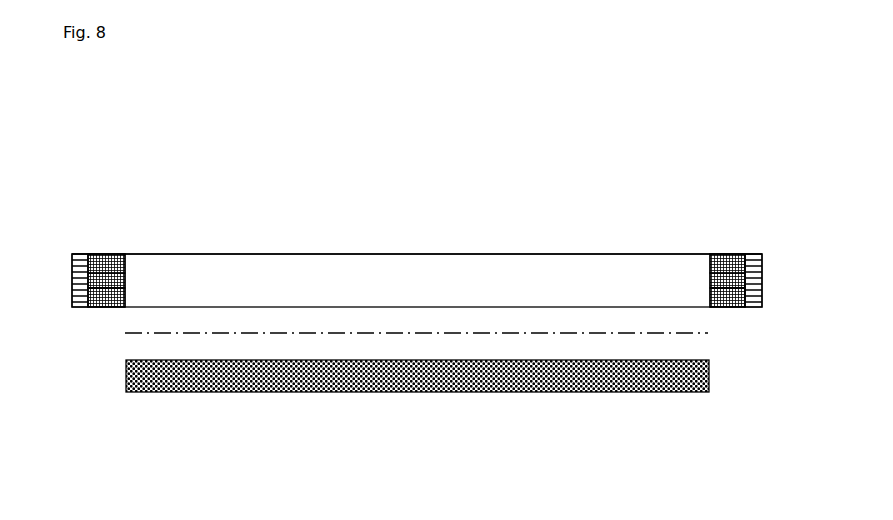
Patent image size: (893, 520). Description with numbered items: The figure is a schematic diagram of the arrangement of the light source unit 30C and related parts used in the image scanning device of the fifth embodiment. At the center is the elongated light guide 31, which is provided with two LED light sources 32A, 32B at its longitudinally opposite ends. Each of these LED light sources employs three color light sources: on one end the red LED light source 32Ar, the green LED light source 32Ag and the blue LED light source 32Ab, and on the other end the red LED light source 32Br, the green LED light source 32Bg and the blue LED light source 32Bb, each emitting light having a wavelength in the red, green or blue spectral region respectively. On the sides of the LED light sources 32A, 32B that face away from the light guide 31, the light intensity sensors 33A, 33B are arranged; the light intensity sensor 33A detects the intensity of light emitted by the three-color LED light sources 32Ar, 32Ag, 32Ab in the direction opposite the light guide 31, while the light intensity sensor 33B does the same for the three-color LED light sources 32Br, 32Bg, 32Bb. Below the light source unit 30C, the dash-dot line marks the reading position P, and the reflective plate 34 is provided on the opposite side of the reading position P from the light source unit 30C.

The light guide 31 is at (342, 267).
The light source unit 30C is at (390, 249).
The LED light source 32A is at (107, 174).
The red LED light source 32Ar is at (103, 253).
The green LED light source 32Ag is at (125, 283).
The blue LED light source 32Ab is at (125, 300).
The LED light source 32B is at (567, 174).
The blue LED light source 32Bb is at (710, 298).
The green LED light source 32Bg is at (710, 282).
The red LED light source 32Br is at (732, 255).
The light intensity sensor 33A is at (77, 303).
The light intensity sensor 33B is at (755, 303).
The reading position P is at (232, 333).
The reflective plate 34 is at (333, 392).